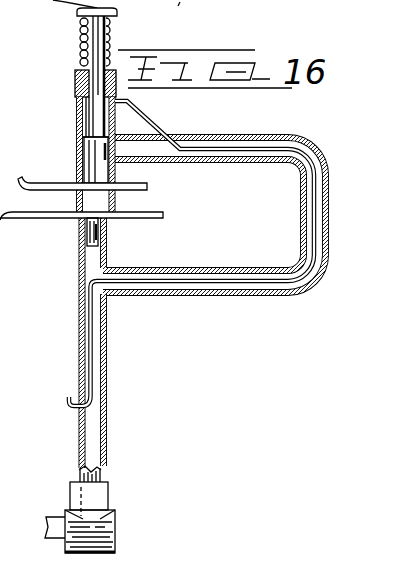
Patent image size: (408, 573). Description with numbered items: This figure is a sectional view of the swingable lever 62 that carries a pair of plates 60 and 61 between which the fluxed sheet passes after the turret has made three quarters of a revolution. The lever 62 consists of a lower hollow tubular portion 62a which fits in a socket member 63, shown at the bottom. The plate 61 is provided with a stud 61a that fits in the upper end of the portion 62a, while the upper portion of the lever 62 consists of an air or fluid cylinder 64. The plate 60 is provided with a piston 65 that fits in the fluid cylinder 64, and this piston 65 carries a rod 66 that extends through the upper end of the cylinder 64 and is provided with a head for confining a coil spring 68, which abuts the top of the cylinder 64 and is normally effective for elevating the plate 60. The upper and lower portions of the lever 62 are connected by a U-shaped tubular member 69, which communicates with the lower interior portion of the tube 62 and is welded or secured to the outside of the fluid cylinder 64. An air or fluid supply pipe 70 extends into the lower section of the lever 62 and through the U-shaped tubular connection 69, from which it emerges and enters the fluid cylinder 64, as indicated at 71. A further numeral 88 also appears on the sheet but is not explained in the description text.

The plate 60 is at (53, 184).
The plate 61 is at (58, 216).
The stud 61a is at (101, 240).
The swingable lever 62 is at (107, 323).
The lower hollow tubular portion 62a is at (107, 441).
The socket member 63 is at (93, 499).
The air or fluid cylinder 64 is at (76, 134).
The piston 65 is at (103, 172).
The rod 66 is at (82, 92).
The coil spring 68 is at (108, 23).
The U-shaped tubular member 69 is at (237, 295).
The air or fluid supply pipe 70 is at (90, 378).
The supply pipe entry into fluid cylinder 71 is at (117, 100).
The lever 88 is at (196, 19).